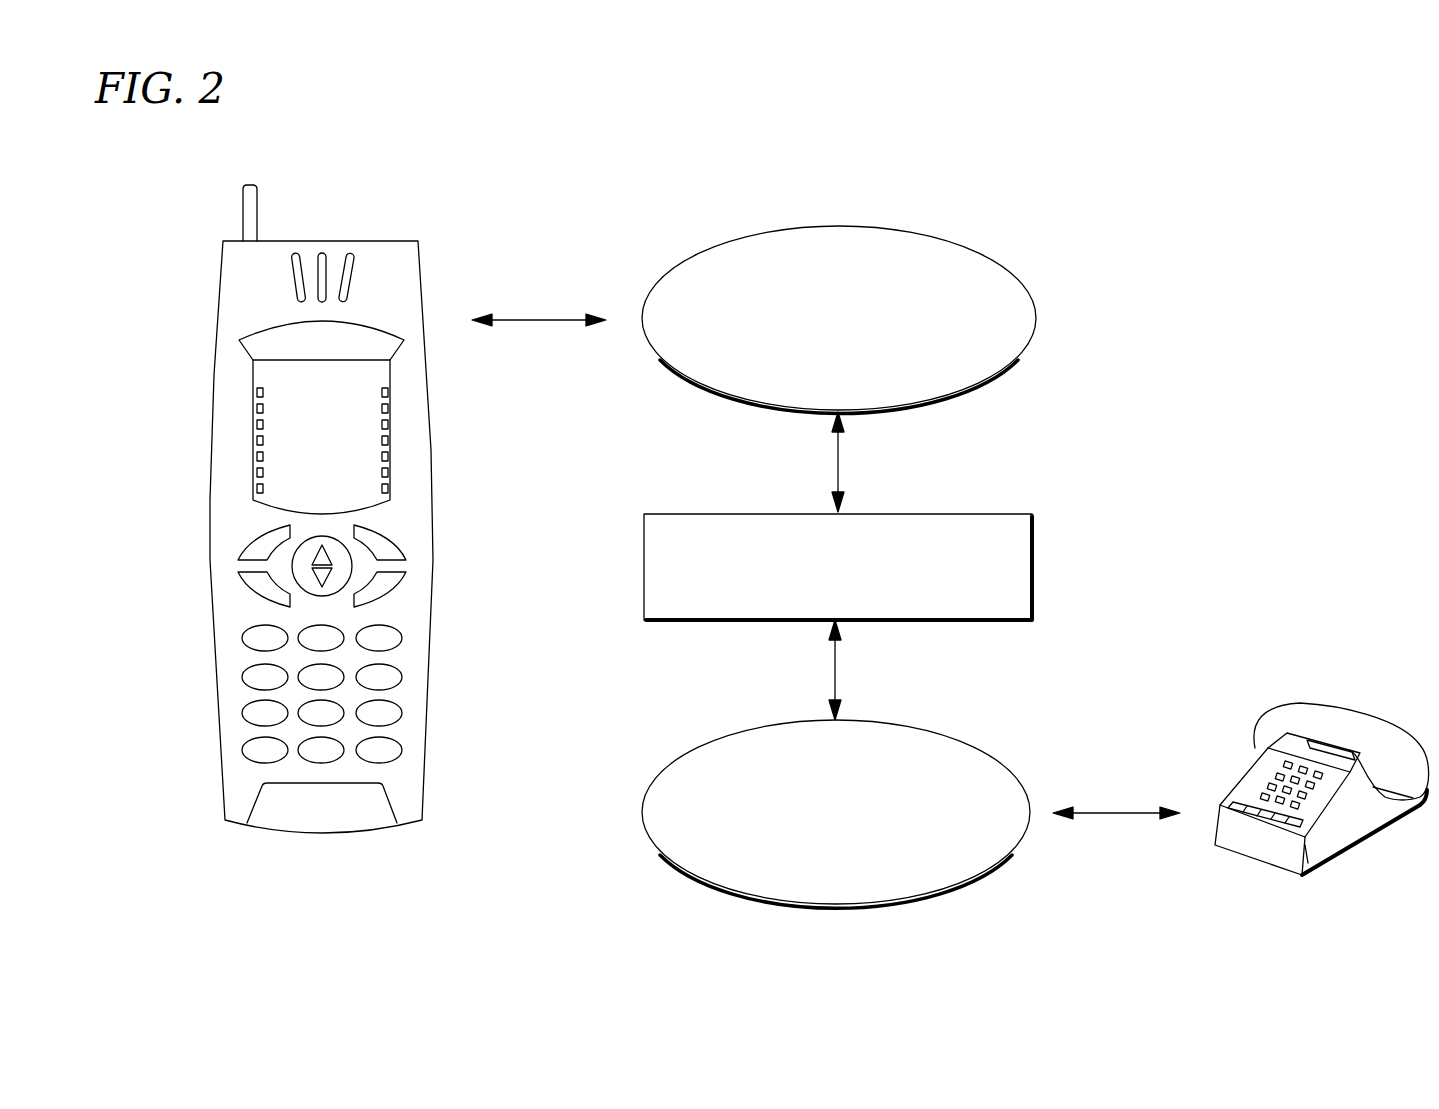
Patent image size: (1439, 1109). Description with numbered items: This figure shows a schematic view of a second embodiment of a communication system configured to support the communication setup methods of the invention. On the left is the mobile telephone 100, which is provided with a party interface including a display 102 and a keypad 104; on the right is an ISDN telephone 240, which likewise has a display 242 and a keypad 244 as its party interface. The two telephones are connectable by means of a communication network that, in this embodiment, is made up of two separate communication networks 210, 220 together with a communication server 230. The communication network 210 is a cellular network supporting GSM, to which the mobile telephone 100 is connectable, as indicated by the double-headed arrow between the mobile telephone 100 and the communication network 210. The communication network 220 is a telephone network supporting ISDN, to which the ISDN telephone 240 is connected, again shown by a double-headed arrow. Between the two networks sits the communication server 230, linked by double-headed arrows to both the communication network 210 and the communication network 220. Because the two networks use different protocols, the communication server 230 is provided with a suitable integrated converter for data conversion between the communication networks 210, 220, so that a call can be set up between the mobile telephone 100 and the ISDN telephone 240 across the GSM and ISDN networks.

The mobile telephone 100 is at (170, 277).
The display 102 is at (292, 434).
The keypad 104 is at (253, 675).
The communication network 210 is at (1036, 320).
The communication network 220 is at (642, 810).
The communication server 230 is at (1032, 560).
The ISDN telephone 240 is at (1367, 845).
The display 242 is at (1330, 745).
The keypad 244 is at (1272, 783).